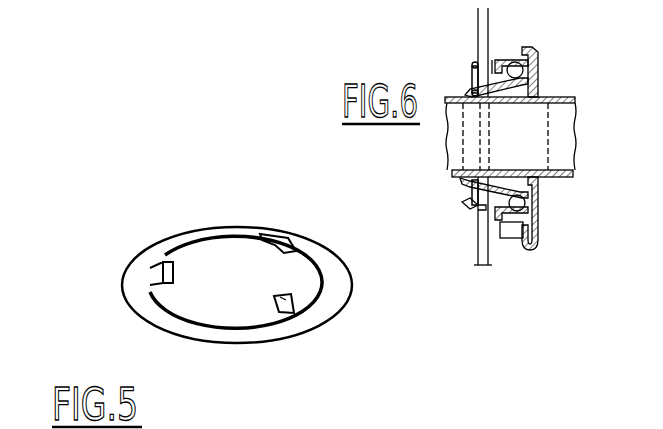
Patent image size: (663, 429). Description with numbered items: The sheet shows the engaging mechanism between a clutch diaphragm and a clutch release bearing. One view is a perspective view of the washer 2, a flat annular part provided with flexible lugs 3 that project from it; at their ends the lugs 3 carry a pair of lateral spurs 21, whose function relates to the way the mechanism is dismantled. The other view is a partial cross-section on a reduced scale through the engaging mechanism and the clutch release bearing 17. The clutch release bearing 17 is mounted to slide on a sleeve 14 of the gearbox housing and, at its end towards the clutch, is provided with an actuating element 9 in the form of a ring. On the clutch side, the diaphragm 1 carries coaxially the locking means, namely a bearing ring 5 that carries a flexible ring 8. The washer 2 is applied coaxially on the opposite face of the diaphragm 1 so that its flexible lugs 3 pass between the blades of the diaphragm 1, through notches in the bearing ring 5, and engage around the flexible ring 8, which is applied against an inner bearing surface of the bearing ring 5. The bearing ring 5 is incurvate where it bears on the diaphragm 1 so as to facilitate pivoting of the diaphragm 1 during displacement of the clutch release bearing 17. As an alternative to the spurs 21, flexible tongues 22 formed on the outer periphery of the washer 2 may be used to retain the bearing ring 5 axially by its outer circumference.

In FIG. 6, the diaphragm 1 is at (483, 30).
In FIG. 5, the washer 2 is at (214, 228).
In FIG. 6, the washer 2 is at (495, 70).
In FIG. 5, the flexible lugs 3 is at (302, 296).
In FIG. 6, the flexible lugs 3 is at (465, 203).
In FIG. 6, the bearing ring 5 is at (473, 66).
In FIG. 6, the flexible ring 8 is at (472, 90).
In FIG. 6, the actuating element 9 is at (454, 182).
In FIG. 6, the sleeve 14 is at (572, 97).
In FIG. 6, the clutch release bearing 17 is at (541, 52).
In FIG. 5, the lateral spurs 21 is at (289, 237).
In FIG. 6, the flexible tongues 22 is at (472, 212).